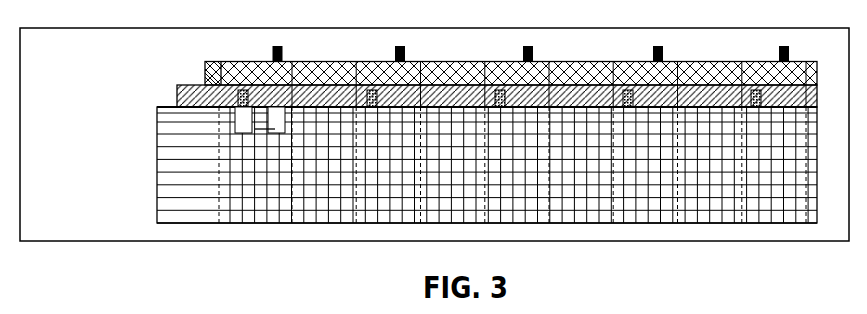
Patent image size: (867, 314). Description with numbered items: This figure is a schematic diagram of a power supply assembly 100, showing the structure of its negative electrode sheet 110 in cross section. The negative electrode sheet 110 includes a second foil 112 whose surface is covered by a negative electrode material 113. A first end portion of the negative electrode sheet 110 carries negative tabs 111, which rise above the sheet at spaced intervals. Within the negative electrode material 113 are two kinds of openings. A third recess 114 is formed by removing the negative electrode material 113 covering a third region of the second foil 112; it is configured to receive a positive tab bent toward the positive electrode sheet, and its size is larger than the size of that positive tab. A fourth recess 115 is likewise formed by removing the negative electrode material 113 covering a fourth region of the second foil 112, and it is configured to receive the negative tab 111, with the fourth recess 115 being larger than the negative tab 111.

The power supply assembly 100 is at (77, 69).
The negative electrode sheet 110 is at (88, 85).
The negative tab 111 is at (238, 96).
The second foil 112 is at (183, 152).
The negative electrode material 113 is at (232, 177).
The third recess 114 is at (275, 129).
The fourth recess 115 is at (250, 112).